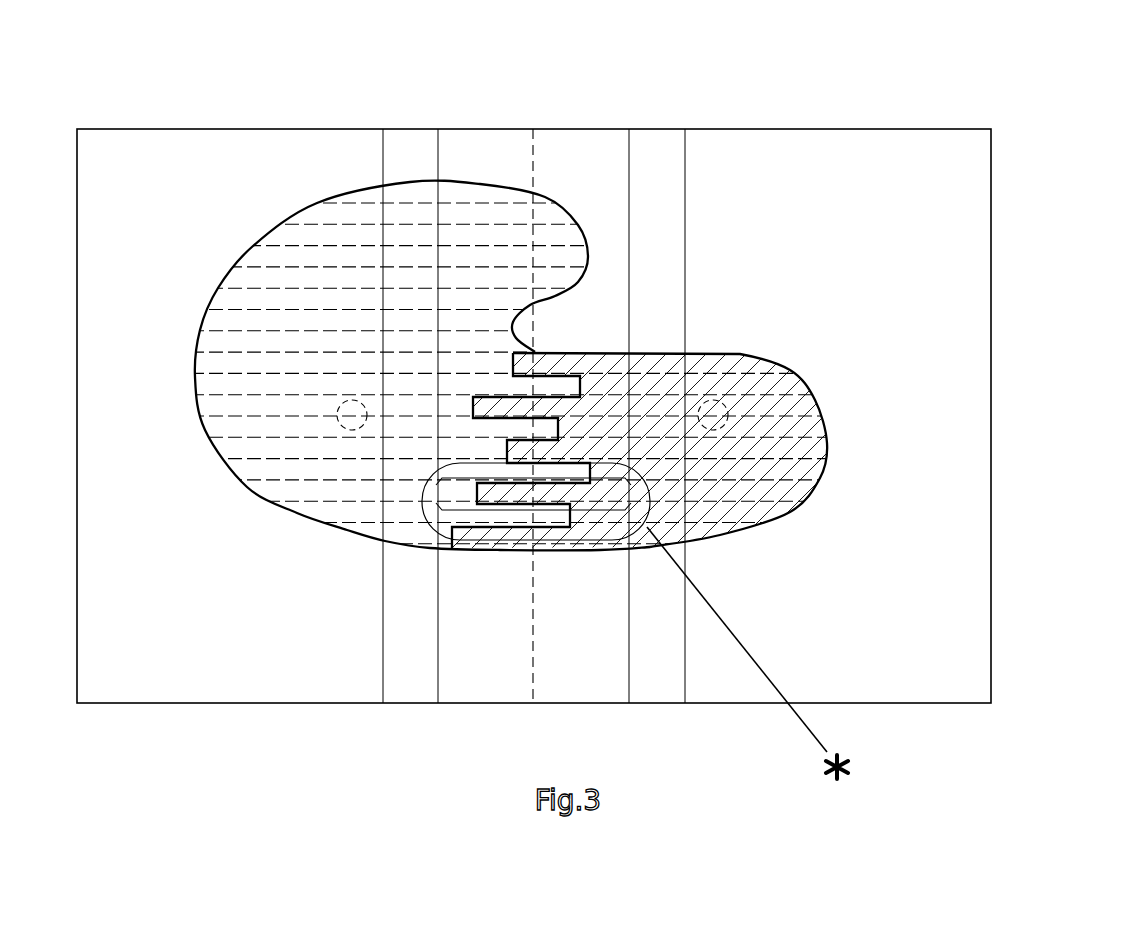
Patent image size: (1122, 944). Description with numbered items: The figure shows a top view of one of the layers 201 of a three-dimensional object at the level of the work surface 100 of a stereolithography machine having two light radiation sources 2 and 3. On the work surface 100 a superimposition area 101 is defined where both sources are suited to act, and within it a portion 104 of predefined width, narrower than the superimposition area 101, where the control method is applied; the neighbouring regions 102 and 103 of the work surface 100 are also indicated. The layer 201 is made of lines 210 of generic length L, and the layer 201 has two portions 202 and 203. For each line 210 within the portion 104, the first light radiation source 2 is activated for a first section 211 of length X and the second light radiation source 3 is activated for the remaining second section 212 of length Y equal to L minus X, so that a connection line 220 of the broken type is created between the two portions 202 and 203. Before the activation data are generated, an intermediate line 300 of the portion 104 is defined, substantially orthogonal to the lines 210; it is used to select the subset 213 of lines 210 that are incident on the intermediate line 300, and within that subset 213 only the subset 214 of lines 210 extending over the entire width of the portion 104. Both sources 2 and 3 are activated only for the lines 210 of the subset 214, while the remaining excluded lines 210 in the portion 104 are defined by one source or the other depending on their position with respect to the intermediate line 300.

The work surface 100 is at (960, 388).
The superimposition area 101 is at (685, 712).
The first region 102 is at (77, 87).
The second region 103 is at (438, 52).
The portion of the superimposition area 104 is at (438, 122).
The first light radiation source 2 is at (342, 425).
The second light radiation source 3 is at (730, 412).
The layer 201 is at (815, 358).
The first portion of the layer 202 is at (308, 278).
The second portion of the layer 203 is at (727, 363).
The lines 210 is at (599, 247).
The first section of the line 211 is at (477, 520).
The second section of the line 212 is at (600, 520).
The subset of incident lines 213 is at (423, 205).
The subset of lines extending over the entire width 214 is at (423, 353).
The connection line 220 is at (538, 350).
The intermediate line 300 is at (537, 170).